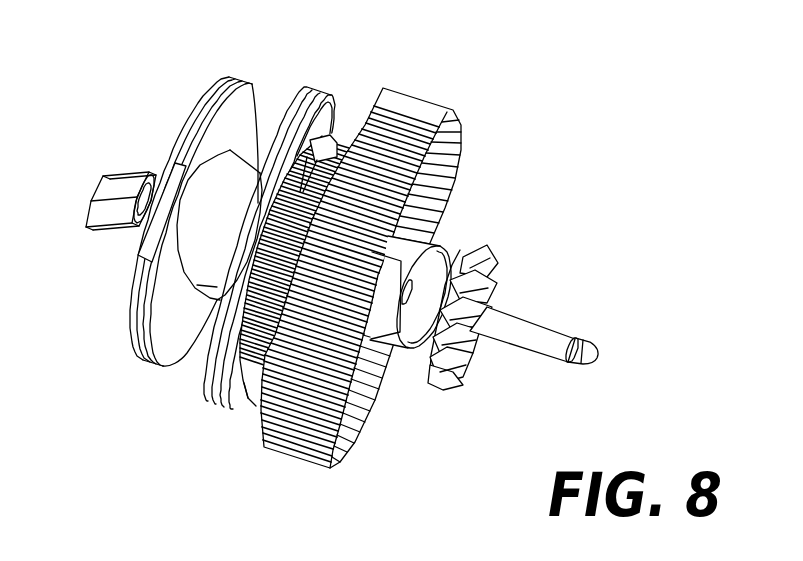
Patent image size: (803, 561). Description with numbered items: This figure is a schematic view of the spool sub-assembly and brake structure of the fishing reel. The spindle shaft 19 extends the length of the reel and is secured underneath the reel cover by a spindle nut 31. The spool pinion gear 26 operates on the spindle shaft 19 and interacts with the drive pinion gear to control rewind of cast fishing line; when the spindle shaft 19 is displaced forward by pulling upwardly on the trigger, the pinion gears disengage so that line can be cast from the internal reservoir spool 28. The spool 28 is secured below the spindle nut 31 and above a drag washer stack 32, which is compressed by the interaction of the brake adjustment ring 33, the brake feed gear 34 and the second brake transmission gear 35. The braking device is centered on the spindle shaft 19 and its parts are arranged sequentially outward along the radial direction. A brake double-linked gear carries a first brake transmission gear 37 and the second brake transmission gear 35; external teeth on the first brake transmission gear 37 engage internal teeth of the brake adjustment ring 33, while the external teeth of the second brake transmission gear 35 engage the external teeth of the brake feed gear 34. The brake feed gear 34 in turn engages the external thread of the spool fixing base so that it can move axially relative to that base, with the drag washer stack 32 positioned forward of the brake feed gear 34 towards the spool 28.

The spindle shaft 19 is at (558, 358).
The spool pinion gear 26 is at (496, 273).
The spool 28 is at (217, 285).
The spindle nut 31 is at (133, 165).
The drag washer stack 32 is at (308, 137).
The brake adjustment ring 33 is at (419, 278).
The brake feed gear 34 is at (333, 173).
The second brake transmission gear 35 is at (250, 404).
The first brake transmission gear 37 is at (350, 410).